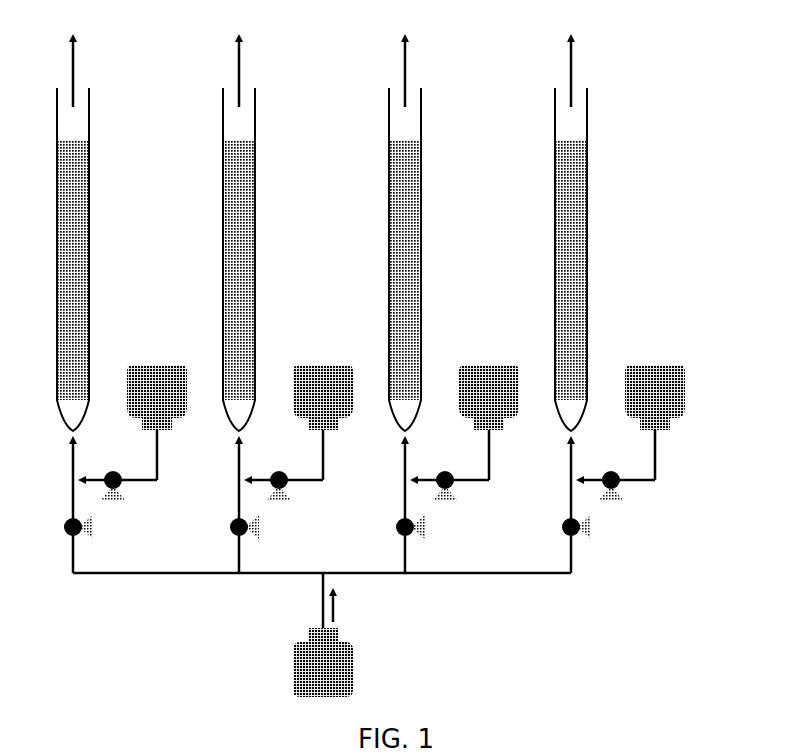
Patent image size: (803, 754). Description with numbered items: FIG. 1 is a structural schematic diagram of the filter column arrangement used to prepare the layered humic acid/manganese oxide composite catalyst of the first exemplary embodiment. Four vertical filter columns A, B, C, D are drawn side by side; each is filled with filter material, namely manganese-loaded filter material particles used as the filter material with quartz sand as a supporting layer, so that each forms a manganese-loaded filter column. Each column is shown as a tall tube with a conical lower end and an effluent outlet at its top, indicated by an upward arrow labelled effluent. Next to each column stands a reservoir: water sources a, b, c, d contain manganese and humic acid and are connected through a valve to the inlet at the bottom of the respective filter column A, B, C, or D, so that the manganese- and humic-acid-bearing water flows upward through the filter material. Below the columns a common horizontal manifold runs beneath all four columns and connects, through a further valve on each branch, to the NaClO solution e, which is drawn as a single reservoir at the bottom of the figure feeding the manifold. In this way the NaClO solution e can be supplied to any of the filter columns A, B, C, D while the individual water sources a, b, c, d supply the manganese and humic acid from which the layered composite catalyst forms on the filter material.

The filter column A is at (85, 216).
The filter column B is at (242, 216).
The filter column C is at (406, 216).
The filter column D is at (572, 216).
The water source containing manganese and humic acid a is at (157, 422).
The water source containing manganese and humic acid b is at (323, 422).
The water source containing manganese and humic acid c is at (489, 422).
The water source containing manganese and humic acid d is at (655, 422).
The NaClO solution e is at (323, 662).